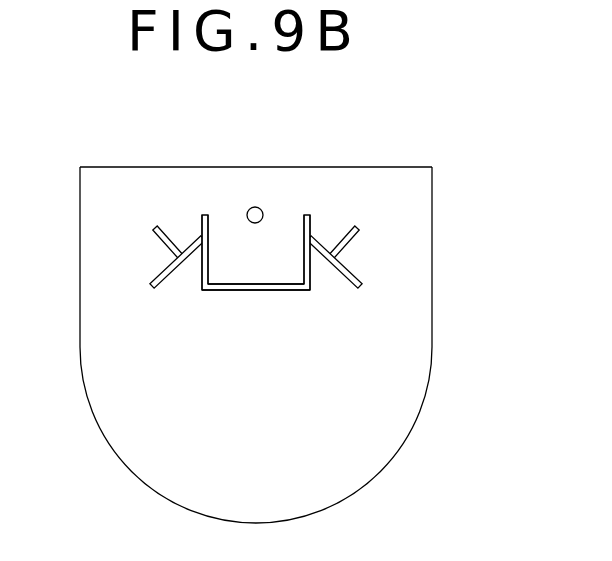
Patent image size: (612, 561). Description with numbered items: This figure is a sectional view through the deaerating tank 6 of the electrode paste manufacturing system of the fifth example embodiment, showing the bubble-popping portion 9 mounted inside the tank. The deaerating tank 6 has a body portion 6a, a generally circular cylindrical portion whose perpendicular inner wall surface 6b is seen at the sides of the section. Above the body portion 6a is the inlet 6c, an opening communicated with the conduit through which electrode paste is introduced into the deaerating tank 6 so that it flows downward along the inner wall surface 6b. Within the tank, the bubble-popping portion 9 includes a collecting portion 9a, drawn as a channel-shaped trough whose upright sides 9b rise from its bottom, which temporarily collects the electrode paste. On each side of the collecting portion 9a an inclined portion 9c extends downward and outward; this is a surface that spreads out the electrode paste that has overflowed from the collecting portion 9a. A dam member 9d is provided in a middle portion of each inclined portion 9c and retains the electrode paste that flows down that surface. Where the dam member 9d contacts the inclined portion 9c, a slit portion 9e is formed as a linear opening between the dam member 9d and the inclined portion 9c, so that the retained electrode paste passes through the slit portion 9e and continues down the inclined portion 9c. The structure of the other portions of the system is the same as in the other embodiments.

The deaerating tank 6 is at (453, 400).
The body portion 6a is at (443, 242).
The inner wall surface 6b is at (82, 290).
The inlet 6c is at (262, 207).
The bubble-popping portion 9 is at (256, 293).
The collecting portion 9a is at (292, 291).
The side portion 9b is at (204, 218).
The inclined portion 9c is at (152, 288).
The dam member 9d is at (155, 229).
The slit portion 9e is at (178, 256).